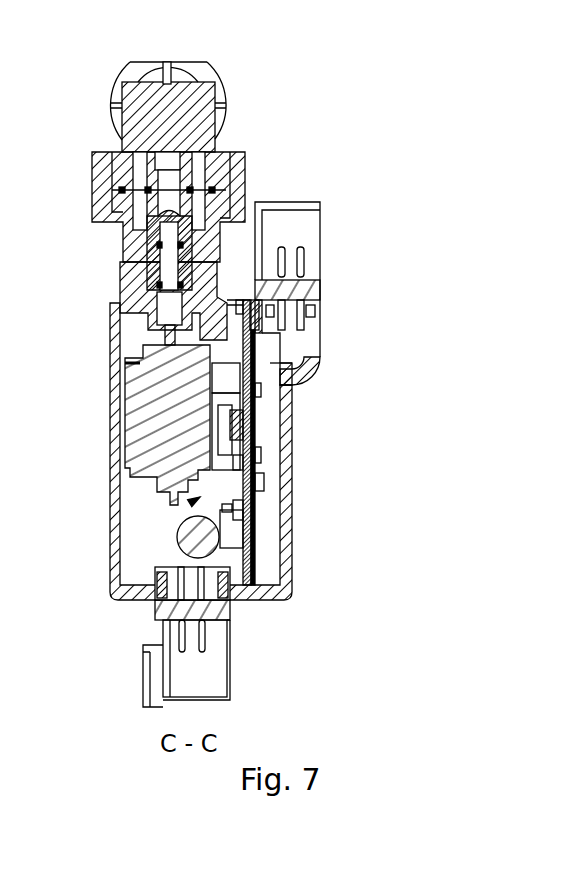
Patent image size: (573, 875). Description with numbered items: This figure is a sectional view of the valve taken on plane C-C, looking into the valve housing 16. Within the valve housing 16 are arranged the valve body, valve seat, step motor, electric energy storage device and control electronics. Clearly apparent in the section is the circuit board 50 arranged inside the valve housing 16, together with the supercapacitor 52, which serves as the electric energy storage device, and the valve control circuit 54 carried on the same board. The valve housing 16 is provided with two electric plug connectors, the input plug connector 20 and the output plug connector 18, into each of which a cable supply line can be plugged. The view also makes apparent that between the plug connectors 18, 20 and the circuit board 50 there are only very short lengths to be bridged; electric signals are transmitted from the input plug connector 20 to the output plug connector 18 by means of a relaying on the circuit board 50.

The valve housing 16 is at (115, 350).
The output plug connector 18 is at (162, 612).
The input plug connector 20 is at (273, 208).
The circuit board 50 is at (253, 545).
The supercapacitor 52 is at (196, 537).
The valve control circuit 54 is at (192, 502).